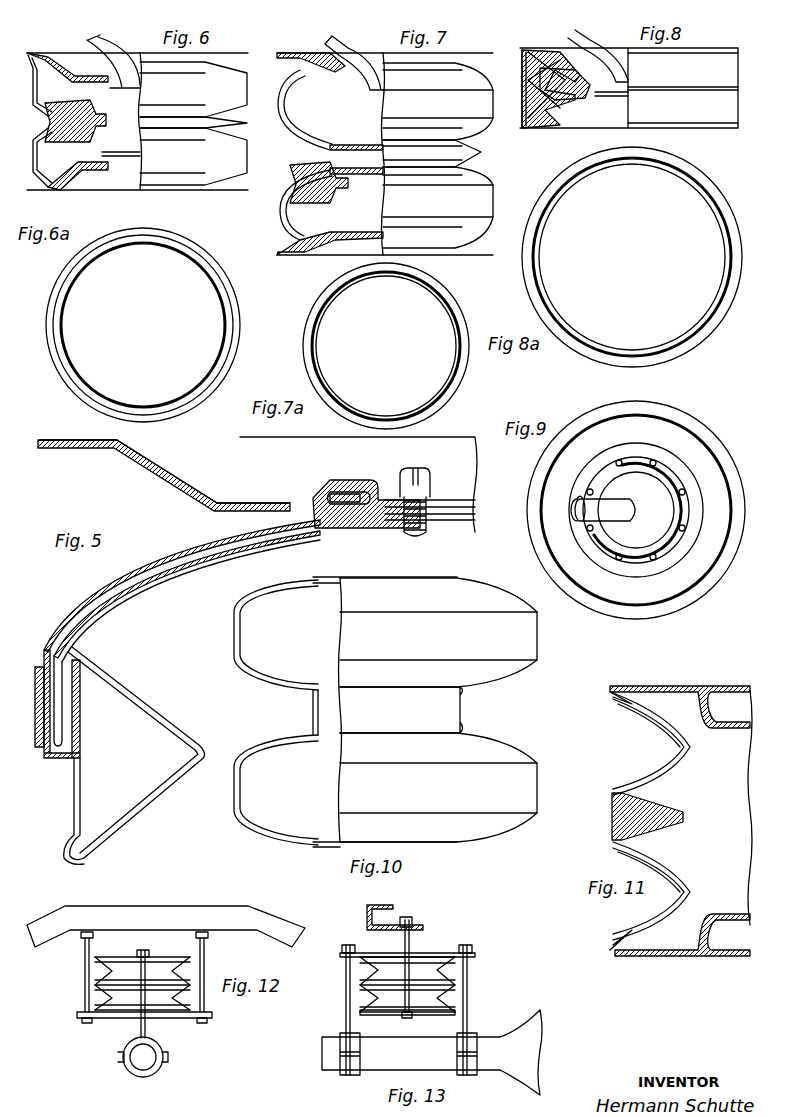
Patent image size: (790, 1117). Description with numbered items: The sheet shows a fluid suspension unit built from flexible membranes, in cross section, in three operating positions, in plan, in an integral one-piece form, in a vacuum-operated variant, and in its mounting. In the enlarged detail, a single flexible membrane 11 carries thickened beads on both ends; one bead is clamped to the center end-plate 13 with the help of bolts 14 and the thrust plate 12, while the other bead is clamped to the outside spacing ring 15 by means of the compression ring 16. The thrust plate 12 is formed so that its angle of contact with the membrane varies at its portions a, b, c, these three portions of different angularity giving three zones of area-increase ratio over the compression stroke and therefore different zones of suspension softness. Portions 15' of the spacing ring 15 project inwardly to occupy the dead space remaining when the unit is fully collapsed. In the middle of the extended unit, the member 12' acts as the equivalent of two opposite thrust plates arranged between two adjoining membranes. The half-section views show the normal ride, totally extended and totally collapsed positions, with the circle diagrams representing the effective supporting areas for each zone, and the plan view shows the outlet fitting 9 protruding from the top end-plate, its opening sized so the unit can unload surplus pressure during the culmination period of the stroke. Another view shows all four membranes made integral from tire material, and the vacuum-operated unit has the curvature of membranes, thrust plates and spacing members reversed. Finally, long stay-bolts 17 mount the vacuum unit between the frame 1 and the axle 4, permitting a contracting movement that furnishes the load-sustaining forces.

In FIG. 12, the frame 1 is at (158, 906).
In FIG. 12, the axle 4 is at (140, 1062).
In FIG. 13, the axle 4 is at (330, 1072).
In FIG. 9, the inlet pipe 9 is at (585, 520).
In FIG. 7, the flexible membrane 11 is at (470, 87).
In FIG. 5, the flexible membrane 11 is at (146, 588).
In FIG. 10, the flexible membrane 11 is at (505, 593).
In FIG. 11, the flexible membrane 11 is at (644, 708).
In FIG. 7, the thrust plate 12 is at (386, 154).
In FIG. 5, the thrust plate 12 is at (164, 475).
In FIG. 9, the thrust plate 12 is at (636, 510).
In FIG. 11, the thrust plate 12 is at (680, 822).
In FIG. 7, the member 12' is at (308, 169).
In FIG. 11, the member 12' is at (652, 816).
In FIG. 5, the center end-plate 13 is at (462, 524).
In FIG. 9, the center end-plate 13 is at (670, 498).
In FIG. 5, the bolts 14 is at (430, 480).
In FIG. 5, the outside spacing ring 15 is at (79, 704).
In FIG. 5, the portions of spacing ring 15' is at (134, 755).
In FIG. 7, the compression ring 16 is at (340, 44).
In FIG. 5, the compression ring 16 is at (35, 672).
In FIG. 12, the stay-bolts 17 is at (84, 960).
In FIG. 13, the stay-bolts 17 is at (346, 995).
In FIG. 5, the portion of thrust plate a is at (155, 478).
In FIG. 5, the portion of thrust plate b is at (70, 450).
In FIG. 5, the portion of thrust plate c is at (222, 506).